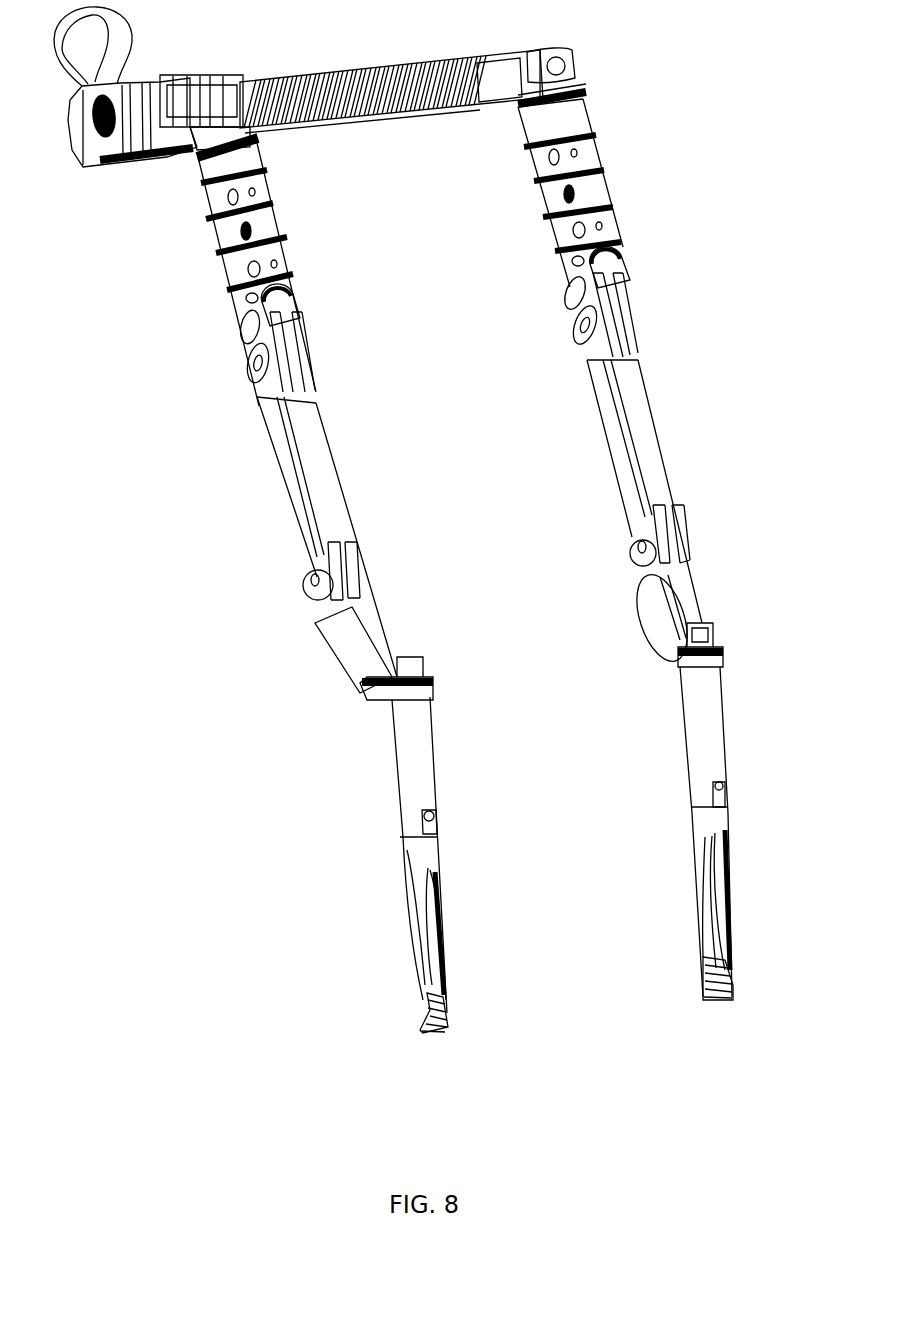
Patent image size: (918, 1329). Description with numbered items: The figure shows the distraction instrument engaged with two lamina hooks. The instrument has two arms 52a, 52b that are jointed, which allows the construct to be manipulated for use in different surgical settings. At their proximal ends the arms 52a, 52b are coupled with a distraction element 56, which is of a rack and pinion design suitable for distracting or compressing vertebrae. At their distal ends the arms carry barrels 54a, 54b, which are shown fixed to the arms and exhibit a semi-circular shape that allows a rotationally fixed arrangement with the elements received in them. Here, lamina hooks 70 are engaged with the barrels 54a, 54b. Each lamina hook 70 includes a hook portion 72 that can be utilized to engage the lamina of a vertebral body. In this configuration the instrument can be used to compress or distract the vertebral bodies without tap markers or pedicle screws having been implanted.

The distraction element 56 is at (348, 80).
The arm 52a is at (648, 397).
The arm 52b is at (278, 448).
The barrel 54a is at (707, 697).
The barrel 54b is at (410, 755).
The lamina hook 70 is at (417, 897).
The hook portion 72 is at (433, 1018).